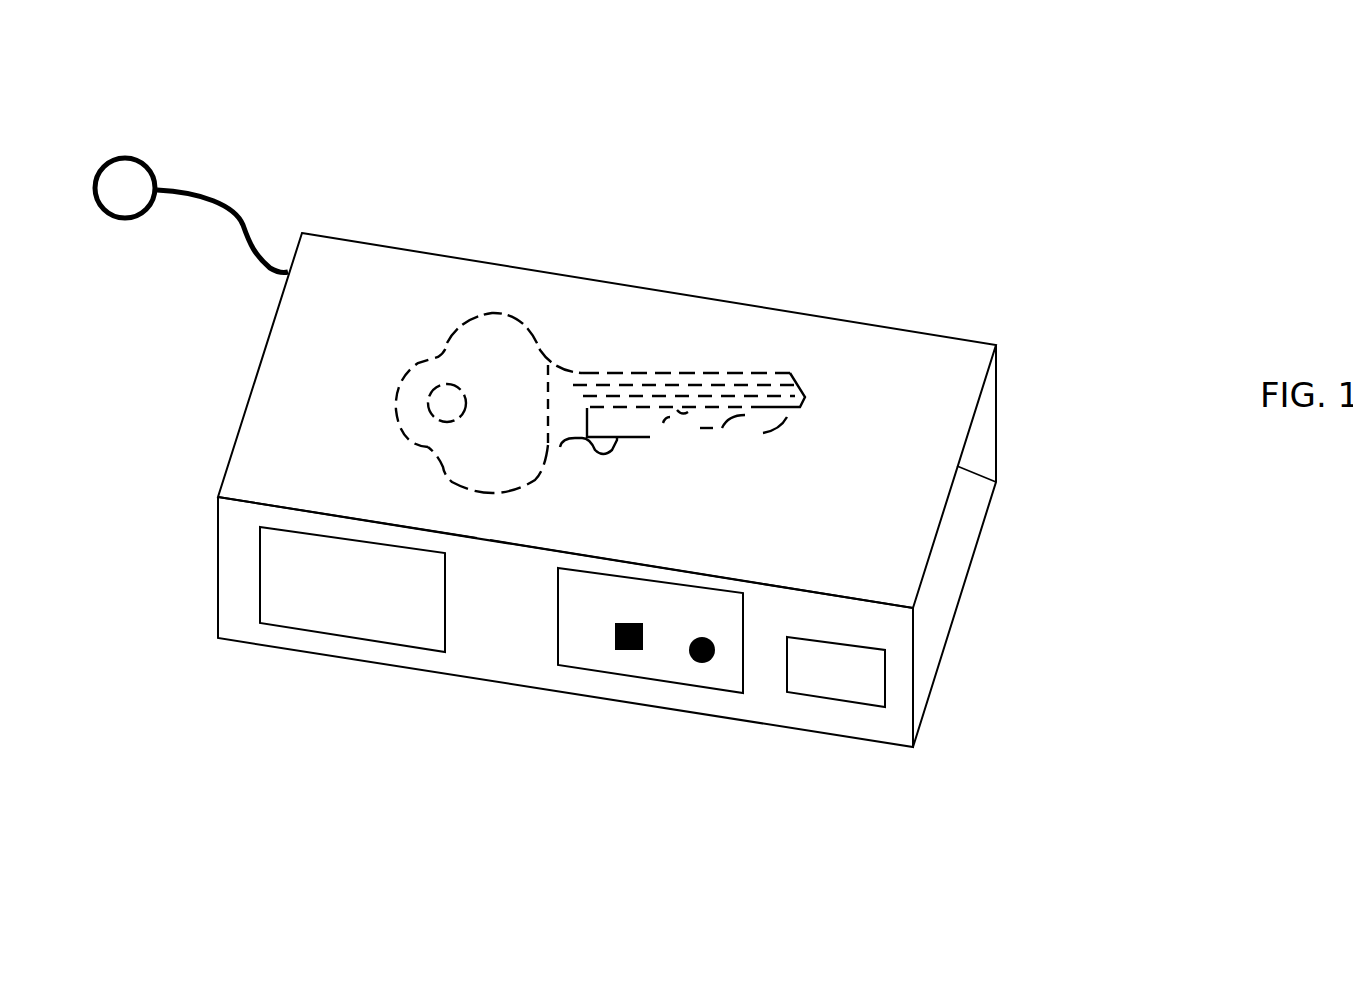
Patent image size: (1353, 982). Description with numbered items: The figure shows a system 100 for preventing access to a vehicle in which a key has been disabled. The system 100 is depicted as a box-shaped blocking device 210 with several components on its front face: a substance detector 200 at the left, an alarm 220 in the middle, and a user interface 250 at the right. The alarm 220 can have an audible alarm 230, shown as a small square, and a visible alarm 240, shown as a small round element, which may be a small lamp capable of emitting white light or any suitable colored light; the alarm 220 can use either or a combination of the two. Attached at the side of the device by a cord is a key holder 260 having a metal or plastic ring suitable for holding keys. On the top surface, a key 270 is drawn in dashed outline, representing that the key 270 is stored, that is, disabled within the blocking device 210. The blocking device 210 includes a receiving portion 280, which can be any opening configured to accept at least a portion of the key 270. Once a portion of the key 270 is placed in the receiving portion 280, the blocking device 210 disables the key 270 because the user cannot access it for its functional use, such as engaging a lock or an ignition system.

The system 100 is at (948, 210).
The blocking device 210 is at (425, 228).
The key 270 is at (500, 343).
The receiving portion 280 is at (951, 521).
The substance detector 200 is at (375, 663).
The alarm 220 is at (565, 683).
The audible alarm 230 is at (632, 650).
The visible alarm 240 is at (712, 663).
The user interface 250 is at (865, 683).
The key holder 260 is at (152, 167).